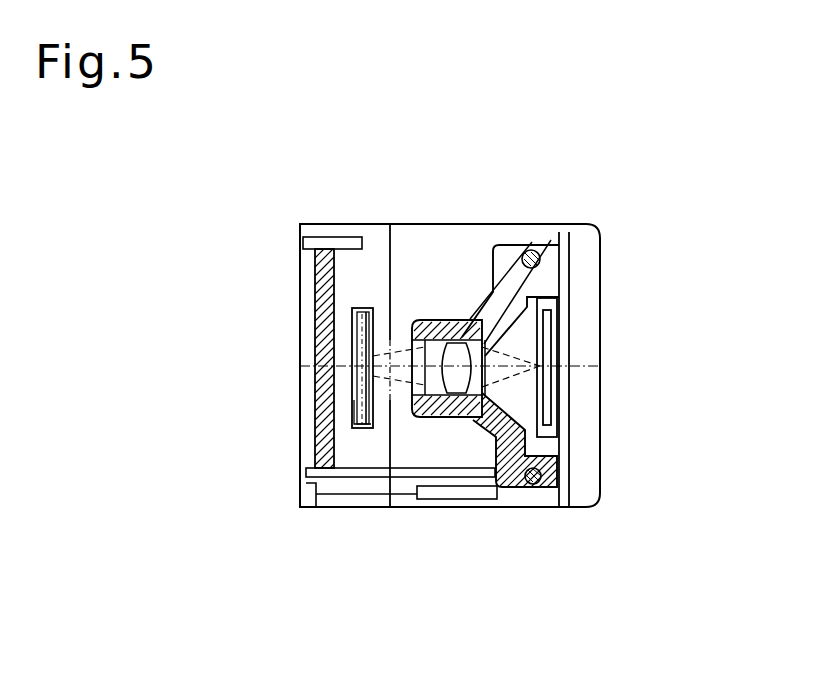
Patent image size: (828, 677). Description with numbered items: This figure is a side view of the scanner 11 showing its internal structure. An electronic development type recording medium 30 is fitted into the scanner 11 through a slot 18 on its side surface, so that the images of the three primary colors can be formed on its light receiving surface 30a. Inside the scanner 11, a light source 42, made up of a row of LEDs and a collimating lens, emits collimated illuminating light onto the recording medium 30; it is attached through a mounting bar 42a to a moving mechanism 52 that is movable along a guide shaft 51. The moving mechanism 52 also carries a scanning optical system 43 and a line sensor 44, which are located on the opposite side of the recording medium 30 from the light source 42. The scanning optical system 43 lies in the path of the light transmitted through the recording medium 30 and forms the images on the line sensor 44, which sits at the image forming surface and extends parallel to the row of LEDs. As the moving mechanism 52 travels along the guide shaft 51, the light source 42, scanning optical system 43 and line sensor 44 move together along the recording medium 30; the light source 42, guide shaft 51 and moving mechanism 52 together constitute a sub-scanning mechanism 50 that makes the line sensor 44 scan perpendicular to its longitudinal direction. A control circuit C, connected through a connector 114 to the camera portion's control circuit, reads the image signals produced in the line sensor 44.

The scanner 11 is at (466, 220).
The slot 18 is at (353, 420).
The electronic development type recording medium 30 is at (353, 330).
The light receiving surface 30a is at (353, 358).
The light source 42 is at (324, 386).
The mounting bar 42a is at (372, 470).
The scanning optical system 43 is at (440, 337).
The line sensor 44 is at (549, 413).
The sub-scanning mechanism 50 is at (578, 258).
The guide shaft 51 is at (537, 252).
The moving mechanism 52 is at (526, 296).
The connector 114 is at (306, 500).
The control circuit C is at (467, 496).